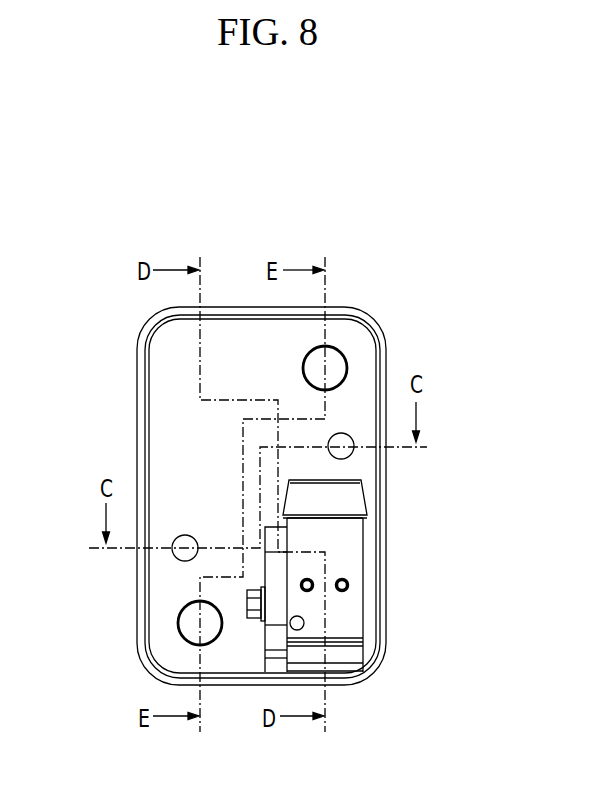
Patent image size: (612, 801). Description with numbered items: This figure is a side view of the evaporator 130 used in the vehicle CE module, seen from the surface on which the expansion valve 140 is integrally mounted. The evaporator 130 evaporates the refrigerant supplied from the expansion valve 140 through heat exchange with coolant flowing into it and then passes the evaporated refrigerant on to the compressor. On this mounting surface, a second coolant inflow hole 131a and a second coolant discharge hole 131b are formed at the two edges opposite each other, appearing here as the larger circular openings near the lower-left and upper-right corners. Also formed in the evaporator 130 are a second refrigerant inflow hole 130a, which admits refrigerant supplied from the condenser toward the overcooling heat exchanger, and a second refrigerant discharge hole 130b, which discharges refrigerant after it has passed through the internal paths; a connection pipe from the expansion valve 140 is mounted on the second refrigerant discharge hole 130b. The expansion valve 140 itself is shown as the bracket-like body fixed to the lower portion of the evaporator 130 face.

The evaporator 130 is at (297, 456).
The second refrigerant inflow hole 130a is at (403, 466).
The second refrigerant discharge hole 130b is at (117, 571).
The second coolant inflow hole 131a is at (132, 643).
The second coolant discharge hole 131b is at (400, 353).
The expansion valve 140 is at (346, 576).